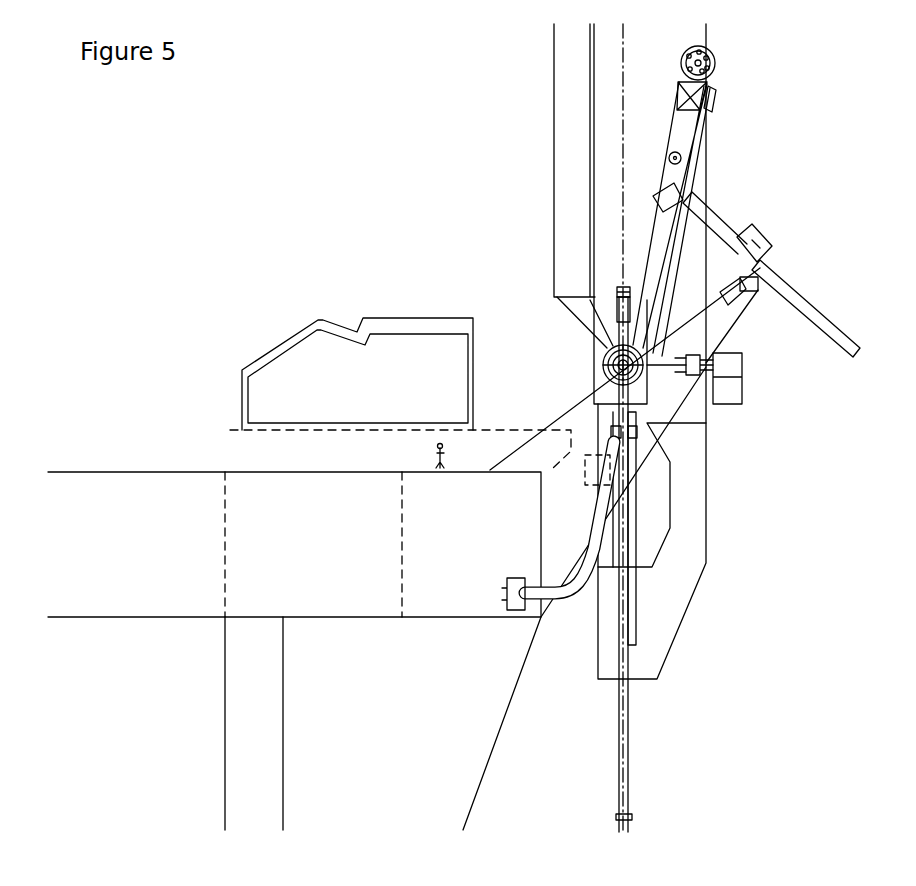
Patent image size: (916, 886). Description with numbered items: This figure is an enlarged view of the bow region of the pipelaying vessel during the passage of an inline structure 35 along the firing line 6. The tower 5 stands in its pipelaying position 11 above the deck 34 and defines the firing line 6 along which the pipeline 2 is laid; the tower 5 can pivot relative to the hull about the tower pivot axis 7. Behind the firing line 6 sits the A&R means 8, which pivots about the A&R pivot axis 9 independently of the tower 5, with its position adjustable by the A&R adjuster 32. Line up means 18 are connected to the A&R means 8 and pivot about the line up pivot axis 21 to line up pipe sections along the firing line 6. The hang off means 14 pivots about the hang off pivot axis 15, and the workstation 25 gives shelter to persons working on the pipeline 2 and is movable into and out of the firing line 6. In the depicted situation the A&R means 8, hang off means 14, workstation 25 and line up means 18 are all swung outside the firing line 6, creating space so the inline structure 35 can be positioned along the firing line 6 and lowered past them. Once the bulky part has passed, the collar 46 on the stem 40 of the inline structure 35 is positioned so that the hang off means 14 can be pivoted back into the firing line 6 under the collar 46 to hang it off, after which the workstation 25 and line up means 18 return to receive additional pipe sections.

The pipeline 2 is at (632, 828).
The tower 5 is at (493, 142).
The firing line 6 is at (626, 62).
The tower pivot axis 7 is at (604, 350).
The A&R means 8 is at (738, 54).
The A&R pivot axis 9 is at (606, 346).
The pipelaying position 11 is at (514, 104).
The hang off means 14 is at (742, 388).
The hang off pivot axis 15 is at (603, 386).
The line up means 18 is at (692, 192).
The line up pivot axis 21 is at (682, 158).
The workstation 25 is at (243, 367).
The A&R adjuster 32 is at (846, 346).
The deck 34 is at (135, 472).
The inline structure 35 is at (636, 534).
The stem 40 is at (612, 312).
The collar 46 is at (617, 288).